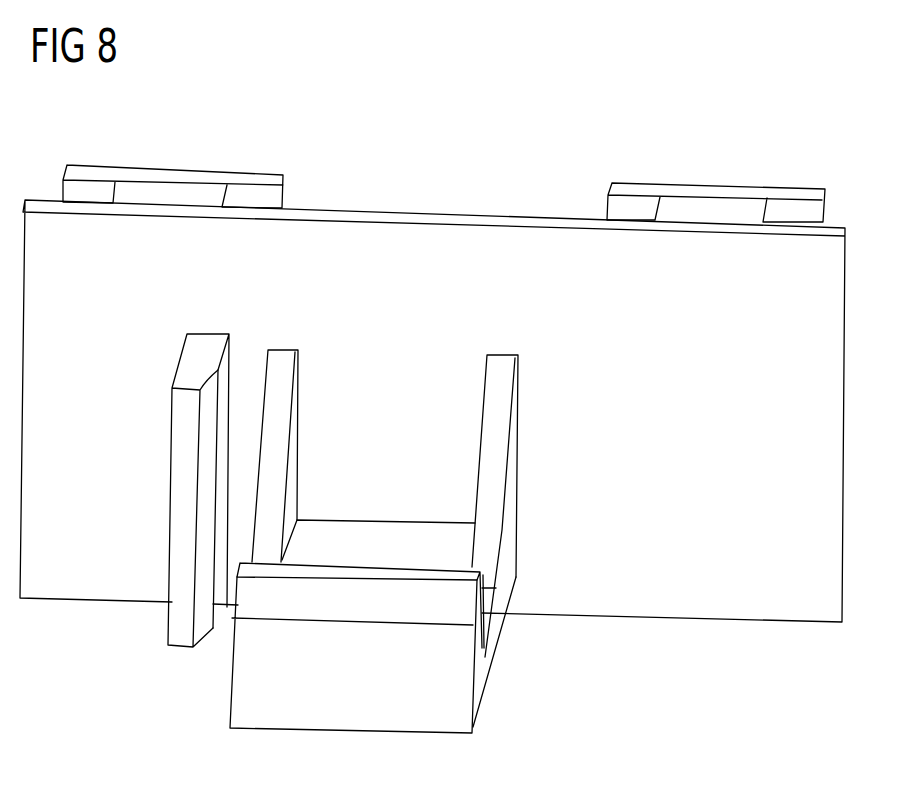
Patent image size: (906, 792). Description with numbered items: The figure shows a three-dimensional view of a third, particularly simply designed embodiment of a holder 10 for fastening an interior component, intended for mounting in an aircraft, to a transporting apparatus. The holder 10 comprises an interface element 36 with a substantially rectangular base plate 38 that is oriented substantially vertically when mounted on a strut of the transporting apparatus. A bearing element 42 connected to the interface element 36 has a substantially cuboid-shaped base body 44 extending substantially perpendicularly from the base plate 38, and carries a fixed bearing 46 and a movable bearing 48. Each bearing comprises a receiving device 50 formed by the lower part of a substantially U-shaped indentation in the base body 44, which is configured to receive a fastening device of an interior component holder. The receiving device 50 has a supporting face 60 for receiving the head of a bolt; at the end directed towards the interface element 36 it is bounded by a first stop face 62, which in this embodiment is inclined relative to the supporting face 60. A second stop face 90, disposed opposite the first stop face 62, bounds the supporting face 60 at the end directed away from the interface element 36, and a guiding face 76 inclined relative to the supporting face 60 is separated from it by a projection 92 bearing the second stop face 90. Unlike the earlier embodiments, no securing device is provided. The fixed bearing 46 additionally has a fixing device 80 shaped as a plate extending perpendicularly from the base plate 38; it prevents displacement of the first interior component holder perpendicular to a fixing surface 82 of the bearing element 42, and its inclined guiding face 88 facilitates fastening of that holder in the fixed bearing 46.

The holder 10 is at (587, 98).
The interface element 36 is at (688, 166).
The base plate 38 is at (450, 238).
The bearing element 42 is at (553, 462).
The base body 44 is at (508, 505).
The fixed bearing 46 is at (249, 327).
The movable bearing 48 is at (558, 353).
The receiving device 50 is at (311, 512).
The supporting face 60 is at (485, 610).
The first stop face 62 is at (282, 407).
The guiding face 76 is at (318, 605).
The fixing device 80 is at (205, 345).
The fixing surface 82 is at (227, 673).
The guiding face 88 is at (207, 460).
The second stop face 90 is at (483, 586).
The projection 92 is at (492, 640).